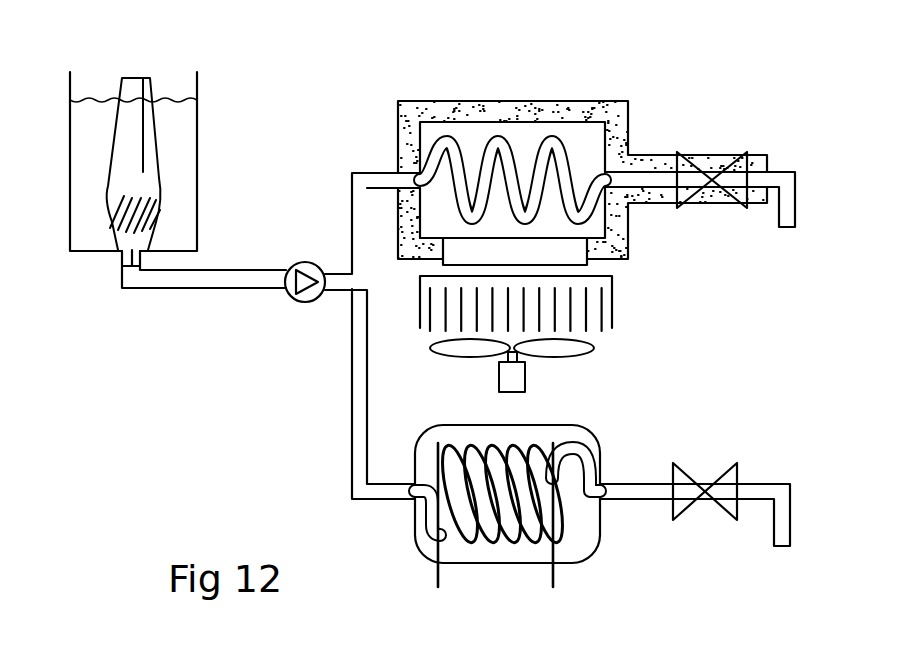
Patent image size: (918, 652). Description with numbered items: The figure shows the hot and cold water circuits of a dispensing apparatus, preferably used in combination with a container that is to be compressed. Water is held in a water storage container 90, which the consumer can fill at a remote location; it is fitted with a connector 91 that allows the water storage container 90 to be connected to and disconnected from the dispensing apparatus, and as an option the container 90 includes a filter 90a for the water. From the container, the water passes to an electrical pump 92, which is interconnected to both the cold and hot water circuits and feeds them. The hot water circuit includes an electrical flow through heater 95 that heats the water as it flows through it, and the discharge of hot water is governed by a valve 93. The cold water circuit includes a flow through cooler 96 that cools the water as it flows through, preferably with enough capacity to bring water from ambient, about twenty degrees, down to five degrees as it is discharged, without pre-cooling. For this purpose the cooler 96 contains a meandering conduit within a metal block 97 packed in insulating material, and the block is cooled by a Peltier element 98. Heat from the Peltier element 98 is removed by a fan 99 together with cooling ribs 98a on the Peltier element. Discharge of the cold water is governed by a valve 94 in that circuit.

The water storage container 90 is at (214, 173).
The filter 90a is at (148, 78).
The connector 91 is at (105, 272).
The pump 92 is at (279, 308).
The valve 93 is at (712, 454).
The valve 94 is at (721, 142).
The electrical flow through heater 95 is at (398, 553).
The flow through cooler 96 is at (479, 87).
The metal block 97 is at (579, 140).
The Peltier element 98 is at (583, 252).
The cooling ribs 98a is at (631, 313).
The fan 99 is at (561, 358).